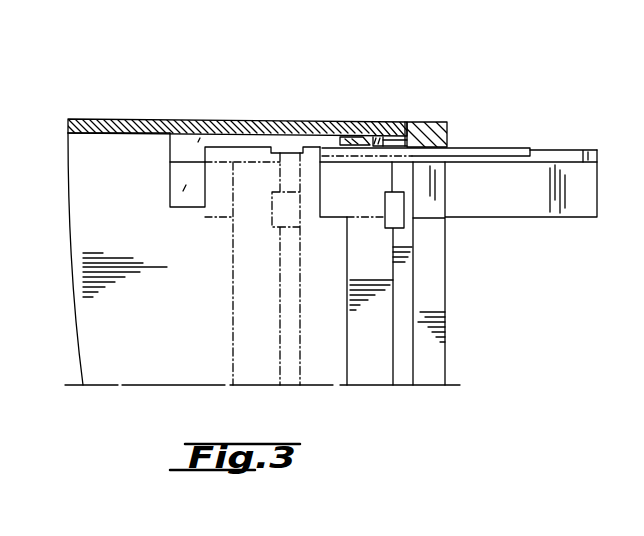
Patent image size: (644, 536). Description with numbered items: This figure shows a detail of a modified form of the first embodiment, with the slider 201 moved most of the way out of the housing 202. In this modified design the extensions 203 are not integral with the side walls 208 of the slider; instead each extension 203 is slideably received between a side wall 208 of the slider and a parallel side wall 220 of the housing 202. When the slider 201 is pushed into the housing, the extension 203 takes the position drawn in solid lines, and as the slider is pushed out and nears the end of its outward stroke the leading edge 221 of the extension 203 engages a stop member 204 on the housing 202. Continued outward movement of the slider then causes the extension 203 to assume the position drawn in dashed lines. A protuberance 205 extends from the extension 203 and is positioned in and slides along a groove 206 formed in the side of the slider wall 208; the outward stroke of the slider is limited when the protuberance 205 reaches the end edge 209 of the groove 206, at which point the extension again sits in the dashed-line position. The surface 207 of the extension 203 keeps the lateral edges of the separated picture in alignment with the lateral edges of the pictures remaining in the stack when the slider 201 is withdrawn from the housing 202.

The slider 201 is at (224, 234).
The housing 202 is at (228, 119).
The extension 203 is at (165, 178).
The stop member 204 is at (430, 121).
The protuberance 205 is at (392, 121).
The groove 206 is at (305, 119).
The surface 207 is at (190, 163).
The side wall 208 is at (256, 119).
The end edge 209 is at (386, 159).
The parallel side wall 220 is at (364, 122).
The leading edge 221 is at (405, 121).